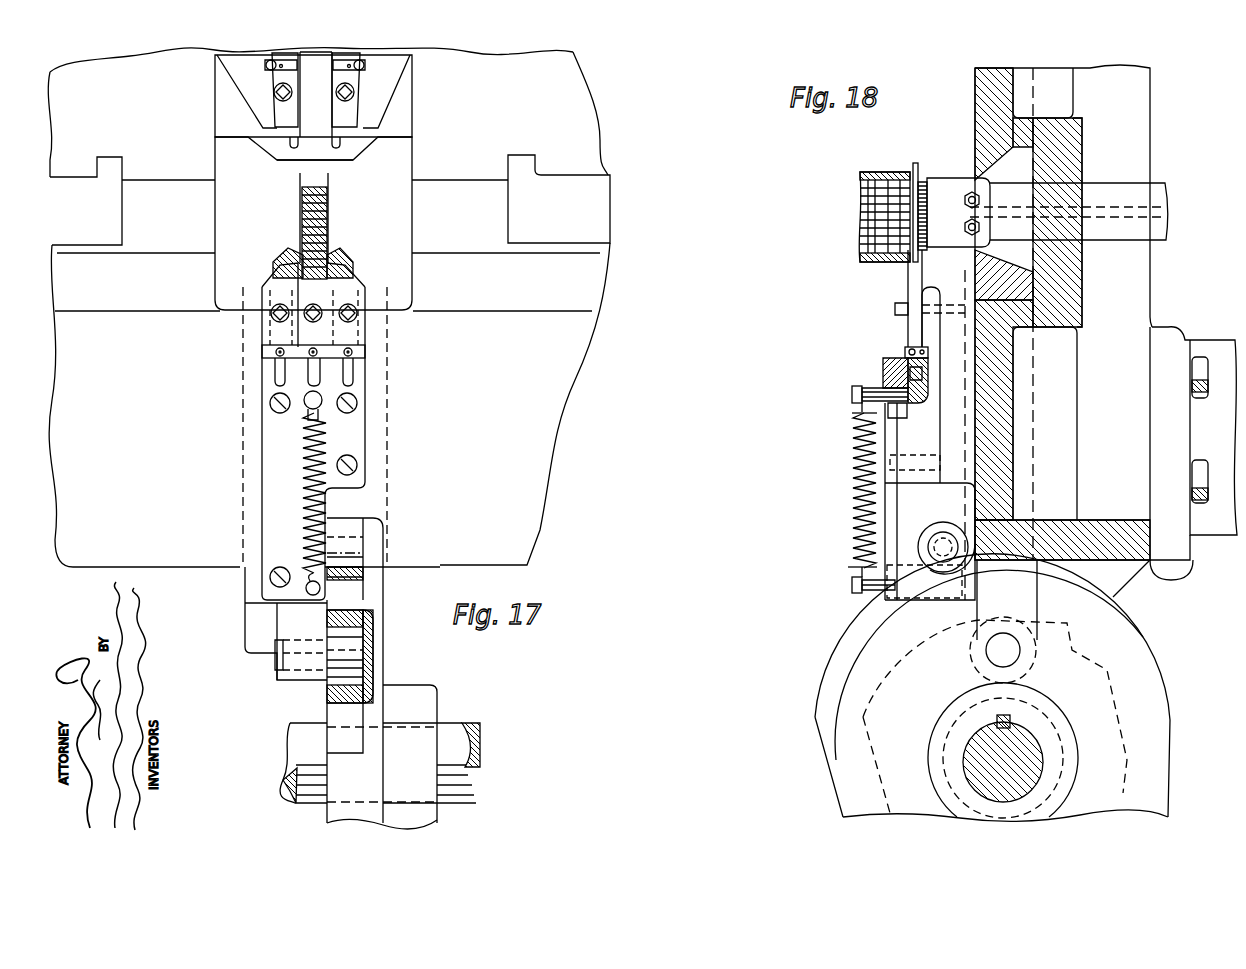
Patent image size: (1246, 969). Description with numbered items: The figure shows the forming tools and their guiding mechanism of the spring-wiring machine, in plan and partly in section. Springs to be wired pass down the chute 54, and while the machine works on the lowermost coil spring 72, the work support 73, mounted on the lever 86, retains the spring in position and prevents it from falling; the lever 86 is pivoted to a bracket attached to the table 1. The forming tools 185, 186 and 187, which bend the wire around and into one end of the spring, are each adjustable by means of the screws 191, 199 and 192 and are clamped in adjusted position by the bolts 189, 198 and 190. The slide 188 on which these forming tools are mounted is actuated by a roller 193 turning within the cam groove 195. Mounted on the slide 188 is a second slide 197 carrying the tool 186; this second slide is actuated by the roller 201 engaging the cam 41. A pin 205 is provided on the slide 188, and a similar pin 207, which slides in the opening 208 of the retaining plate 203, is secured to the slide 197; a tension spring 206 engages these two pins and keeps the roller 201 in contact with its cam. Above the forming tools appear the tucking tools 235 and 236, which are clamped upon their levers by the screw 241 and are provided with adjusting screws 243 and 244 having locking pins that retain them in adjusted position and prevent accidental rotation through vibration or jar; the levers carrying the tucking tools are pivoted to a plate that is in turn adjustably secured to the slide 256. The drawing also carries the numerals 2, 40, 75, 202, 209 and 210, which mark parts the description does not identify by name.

In FIG. 17, the table 1 is at (555, 412).
In FIG. 18, the table 1 is at (1128, 133).
In FIG. 18, the bracket 2 is at (1172, 335).
In FIG. 17, the shaft 40 is at (454, 729).
In FIG. 18, the shaft 40 is at (980, 762).
In FIG. 17, the cam 41 is at (423, 692).
In FIG. 18, the cam 41 is at (852, 637).
In FIG. 18, the chute 54 is at (868, 178).
In FIG. 18, the coil spring 72 is at (860, 215).
In FIG. 18, the work support 73 is at (938, 188).
In FIG. 17, the holder block 75 is at (313, 223).
In FIG. 18, the lever 86 is at (1098, 193).
In FIG. 17, the forming tool 185 is at (276, 263).
In FIG. 17, the forming tool 186 is at (343, 270).
In FIG. 18, the forming tool 186 is at (915, 300).
In FIG. 17, the forming tool 187 is at (343, 259).
In FIG. 17, the slide 188 is at (290, 617).
In FIG. 17, the bolt 189 is at (271, 318).
In FIG. 17, the bolt 190 is at (357, 321).
In FIG. 17, the screw 191 is at (270, 352).
In FIG. 17, the screw 192 is at (367, 352).
In FIG. 17, the roller 193 is at (353, 630).
In FIG. 18, the roller 193 is at (1047, 664).
In FIG. 18, the cam groove 195 is at (877, 708).
In FIG. 18, the second slide 197 is at (890, 363).
In FIG. 17, the bolt 198 is at (327, 300).
In FIG. 18, the bolt 198 is at (895, 308).
In FIG. 17, the screw 199 is at (323, 356).
In FIG. 18, the screw 199 is at (905, 352).
In FIG. 18, the roller 201 is at (941, 528).
In FIG. 18, the roller pin 202 is at (930, 548).
In FIG. 18, the retaining plate 203 is at (890, 369).
In FIG. 18, the pin 205 is at (868, 592).
In FIG. 18, the tension spring 206 is at (852, 471).
In FIG. 18, the pin 207 is at (852, 395).
In FIG. 18, the opening 208 is at (895, 406).
In FIG. 17, the guide block 209 is at (108, 163).
In FIG. 17, the guide block 210 is at (515, 163).
In FIG. 17, the tucking tool 235 is at (281, 122).
In FIG. 17, the tucking tool 236 is at (352, 124).
In FIG. 17, the screw 241 is at (272, 93).
In FIG. 17, the adjusting screw 243 is at (262, 70).
In FIG. 17, the adjusting screw 244 is at (366, 72).
In FIG. 17, the slide 256 is at (287, 160).